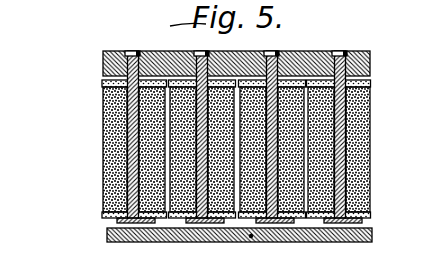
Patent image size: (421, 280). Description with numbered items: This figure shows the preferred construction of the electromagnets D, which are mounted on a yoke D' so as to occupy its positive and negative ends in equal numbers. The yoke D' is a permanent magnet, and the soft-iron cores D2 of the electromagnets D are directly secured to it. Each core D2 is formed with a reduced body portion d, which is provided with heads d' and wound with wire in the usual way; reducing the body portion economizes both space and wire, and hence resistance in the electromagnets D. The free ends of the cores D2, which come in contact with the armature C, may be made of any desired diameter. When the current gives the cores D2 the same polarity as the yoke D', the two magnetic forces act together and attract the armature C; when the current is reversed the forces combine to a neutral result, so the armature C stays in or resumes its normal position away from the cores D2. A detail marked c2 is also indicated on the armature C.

The electromagnet D is at (227, 130).
The yoke D' is at (251, 65).
The core D2 is at (134, 51).
The reduced body portion d is at (222, 149).
The head d' is at (238, 226).
The armature C is at (322, 242).
The base plate hole c2 is at (251, 239).